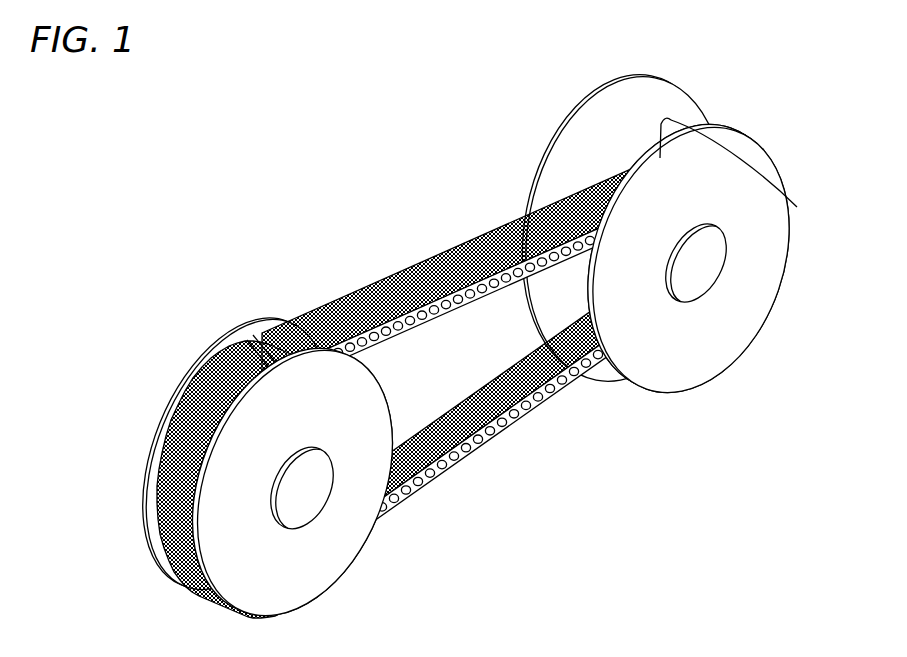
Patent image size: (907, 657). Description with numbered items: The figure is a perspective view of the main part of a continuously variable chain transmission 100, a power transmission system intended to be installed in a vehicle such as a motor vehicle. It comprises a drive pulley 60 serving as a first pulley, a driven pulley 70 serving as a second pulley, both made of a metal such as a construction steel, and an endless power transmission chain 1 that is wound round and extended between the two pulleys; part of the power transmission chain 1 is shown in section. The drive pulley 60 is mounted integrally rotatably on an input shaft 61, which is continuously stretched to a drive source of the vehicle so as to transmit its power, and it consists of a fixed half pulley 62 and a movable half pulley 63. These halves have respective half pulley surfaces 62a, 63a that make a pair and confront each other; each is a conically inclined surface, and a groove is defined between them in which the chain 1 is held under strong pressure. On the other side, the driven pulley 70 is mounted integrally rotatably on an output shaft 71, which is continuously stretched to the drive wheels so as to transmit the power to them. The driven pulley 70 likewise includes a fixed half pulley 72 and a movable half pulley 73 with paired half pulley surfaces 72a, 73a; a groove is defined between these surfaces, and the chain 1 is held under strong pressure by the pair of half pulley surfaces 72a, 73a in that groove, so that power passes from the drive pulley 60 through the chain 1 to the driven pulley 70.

The power transmission chain 1 is at (430, 264).
The drive pulley 60 is at (248, 454).
The input shaft 61 is at (304, 511).
The fixed half pulley 62 is at (236, 440).
The half pulley surface 62a is at (246, 330).
The movable half pulley 63 is at (110, 367).
The half pulley surface 63a is at (186, 578).
The driven pulley 70 is at (697, 238).
The output shaft 71 is at (700, 284).
The fixed half pulley 72 is at (675, 227).
The half pulley surface 72a is at (599, 134).
The movable half pulley 73 is at (721, 127).
The half pulley surface 73a is at (787, 202).
The continuously variable chain transmission 100 is at (482, 324).